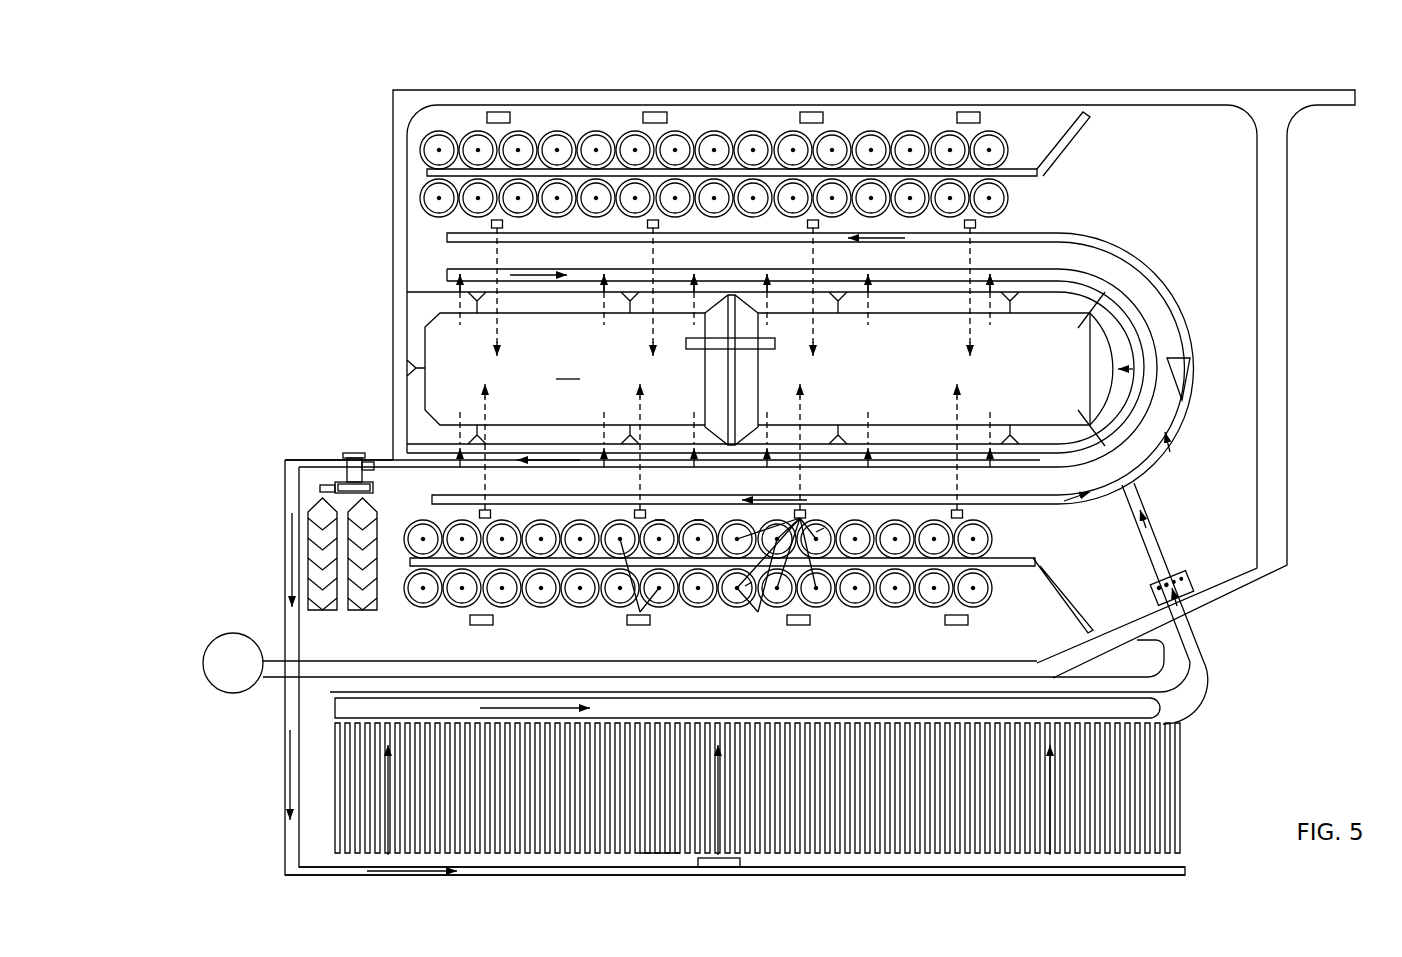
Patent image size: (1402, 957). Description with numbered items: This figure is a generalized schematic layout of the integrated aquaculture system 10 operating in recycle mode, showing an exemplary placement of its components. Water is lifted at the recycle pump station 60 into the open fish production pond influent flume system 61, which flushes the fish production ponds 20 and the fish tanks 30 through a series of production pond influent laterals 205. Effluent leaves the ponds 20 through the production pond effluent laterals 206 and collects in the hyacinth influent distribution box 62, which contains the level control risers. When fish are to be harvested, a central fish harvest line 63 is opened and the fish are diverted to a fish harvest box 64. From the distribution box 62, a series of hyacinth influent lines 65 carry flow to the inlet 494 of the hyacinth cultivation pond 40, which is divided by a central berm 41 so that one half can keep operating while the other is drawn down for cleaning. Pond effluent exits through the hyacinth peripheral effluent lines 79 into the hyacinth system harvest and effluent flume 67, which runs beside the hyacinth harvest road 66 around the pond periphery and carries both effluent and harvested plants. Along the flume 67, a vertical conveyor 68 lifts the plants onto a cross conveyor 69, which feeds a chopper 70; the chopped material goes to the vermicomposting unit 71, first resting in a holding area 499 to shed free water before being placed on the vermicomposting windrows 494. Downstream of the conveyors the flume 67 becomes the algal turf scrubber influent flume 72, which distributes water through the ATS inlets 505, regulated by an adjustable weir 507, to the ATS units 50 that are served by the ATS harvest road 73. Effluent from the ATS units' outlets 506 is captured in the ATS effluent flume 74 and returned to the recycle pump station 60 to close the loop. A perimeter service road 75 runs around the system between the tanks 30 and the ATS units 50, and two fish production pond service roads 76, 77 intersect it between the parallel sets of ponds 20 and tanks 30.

The integrated aquaculture system 10 is at (366, 76).
The fish production ponds 20 is at (993, 596).
The fish tanks 30 is at (432, 158).
The hyacinth cultivation pond 40 is at (760, 369).
The central berm 41 is at (728, 370).
The ATS units 50 is at (950, 852).
The recycle pump station 60 is at (1155, 578).
The fish production pond influent flume system 61 is at (1030, 237).
The hyacinth influent distribution box 62 is at (800, 513).
The central fish harvest line 63 is at (616, 614).
The fish harvest box 64 is at (662, 112).
The hyacinth influent lines 65 is at (968, 325).
The hyacinth harvest road 66 is at (950, 292).
The hyacinth system harvest and effluent flume 67 is at (447, 276).
The vertical conveyor 68 is at (366, 455).
The cross conveyor 69 is at (347, 472).
The chopper 70 is at (374, 487).
The vermicomposting unit 71 is at (375, 600).
The algal turf scrubber influent flume 72 is at (487, 874).
The ATS harvest road 73 is at (330, 690).
The ATS effluent flume 74 is at (1195, 712).
The perimeter service road 75 is at (1250, 104).
The fish production pond service road 76 is at (1063, 600).
The fish production pond service road 77 is at (1068, 140).
The hyacinth peripheral effluent lines 79 is at (862, 308).
The production pond influent laterals 205 is at (697, 513).
The production pond effluent laterals 206 is at (822, 532).
The vermicomposting windrows 494 is at (352, 513).
The holding area 499 is at (322, 482).
The ATS inlets 505 is at (655, 855).
The ATS units' outlets 506 is at (1178, 738).
The adjustable weir 507 is at (742, 862).